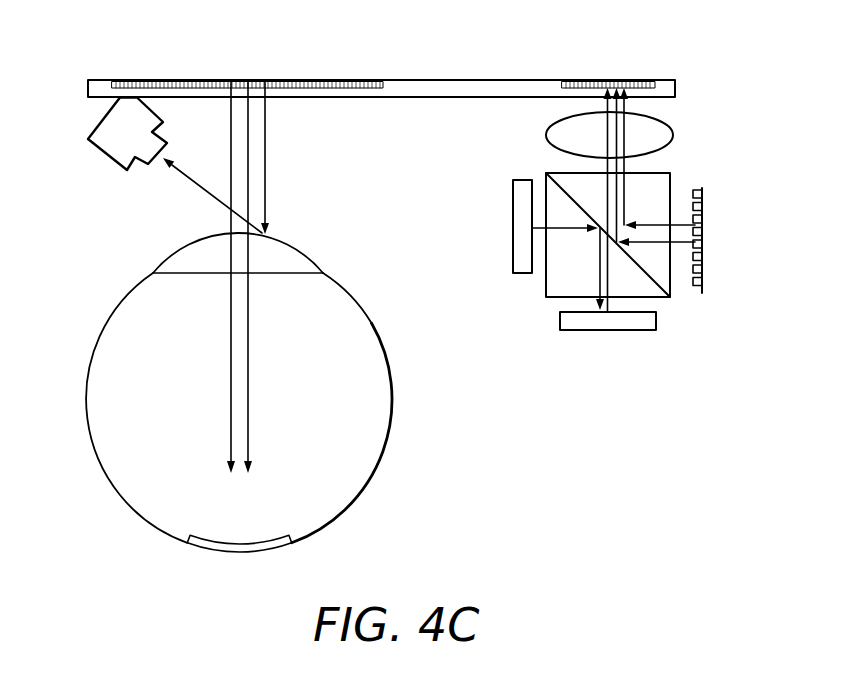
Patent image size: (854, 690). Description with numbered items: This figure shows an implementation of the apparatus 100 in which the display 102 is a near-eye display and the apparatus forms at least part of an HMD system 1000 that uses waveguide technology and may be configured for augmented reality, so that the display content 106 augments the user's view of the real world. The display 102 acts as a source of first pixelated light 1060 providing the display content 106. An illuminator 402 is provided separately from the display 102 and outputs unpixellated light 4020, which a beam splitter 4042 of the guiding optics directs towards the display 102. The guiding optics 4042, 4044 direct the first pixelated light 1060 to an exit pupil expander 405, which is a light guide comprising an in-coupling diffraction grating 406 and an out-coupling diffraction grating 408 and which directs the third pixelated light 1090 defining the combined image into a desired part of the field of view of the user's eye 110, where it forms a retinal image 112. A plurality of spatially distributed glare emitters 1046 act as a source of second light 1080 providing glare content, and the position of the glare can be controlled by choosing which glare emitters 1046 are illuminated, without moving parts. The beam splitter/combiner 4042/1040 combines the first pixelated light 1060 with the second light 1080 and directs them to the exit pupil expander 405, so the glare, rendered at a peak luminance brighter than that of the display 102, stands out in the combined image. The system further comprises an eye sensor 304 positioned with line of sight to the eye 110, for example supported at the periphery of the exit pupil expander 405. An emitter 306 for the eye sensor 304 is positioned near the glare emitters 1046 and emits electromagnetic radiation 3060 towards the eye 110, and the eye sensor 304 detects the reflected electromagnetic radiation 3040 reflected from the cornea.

The apparatus 100 is at (720, 110).
The display 102 is at (580, 332).
The display content 106 is at (656, 308).
The user's eye 110 is at (392, 385).
The retinal image 112 is at (197, 552).
The eye sensor 304 is at (96, 151).
The emitter 306 is at (703, 205).
The illuminator 402 is at (513, 261).
The exit pupil expander 405 is at (461, 79).
The in-coupling diffraction grating 406 is at (643, 79).
The out-coupling diffraction grating 408 is at (147, 79).
The HMD system 1000 is at (90, 264).
The beam combiner 1040 is at (608, 282).
The glare emitters 1046 is at (703, 193).
The first pixelated light 1060 is at (662, 298).
The second light 1080 is at (672, 247).
The third pixelated light 1090 is at (230, 224).
The reflected electromagnetic radiation 3040 is at (185, 179).
The electromagnetic radiation 3060 is at (653, 222).
The light from the illuminator 4020 is at (565, 230).
The beam splitter 4042 is at (563, 192).
The guiding optics 4044 is at (546, 132).